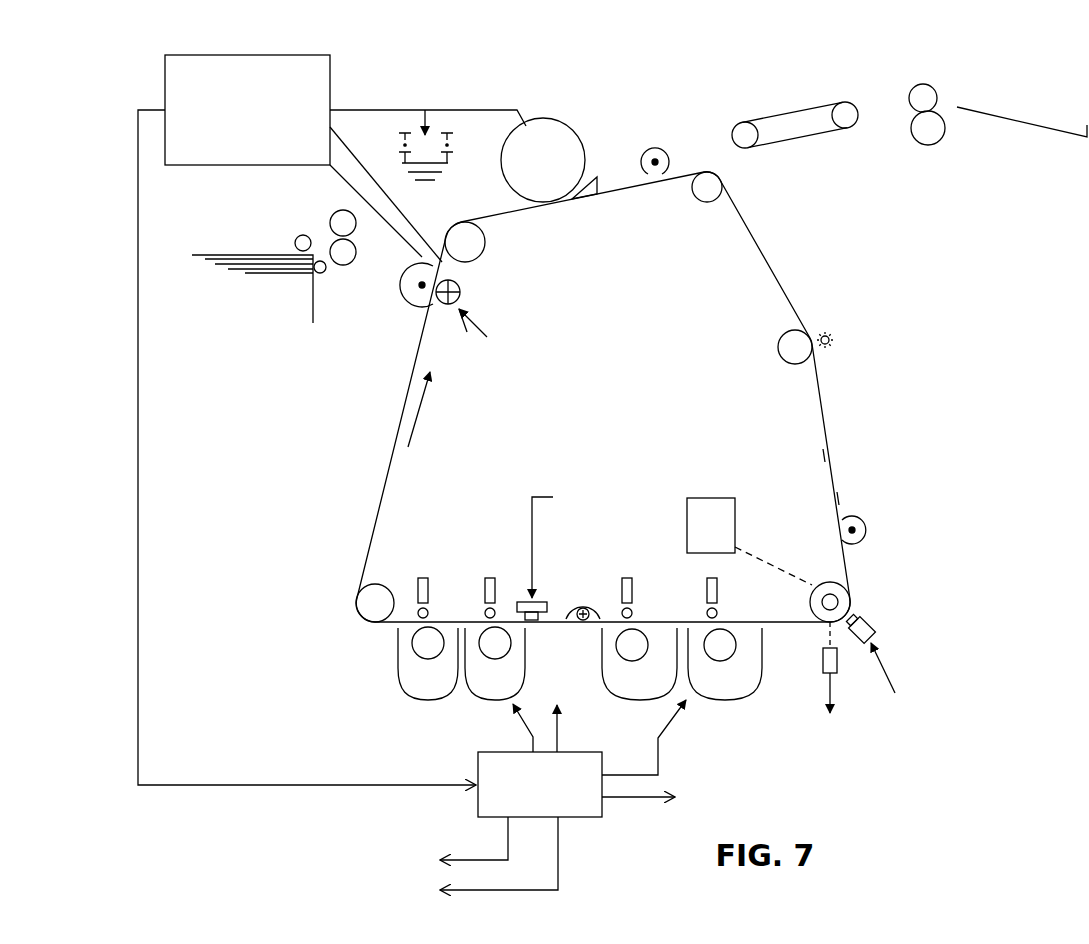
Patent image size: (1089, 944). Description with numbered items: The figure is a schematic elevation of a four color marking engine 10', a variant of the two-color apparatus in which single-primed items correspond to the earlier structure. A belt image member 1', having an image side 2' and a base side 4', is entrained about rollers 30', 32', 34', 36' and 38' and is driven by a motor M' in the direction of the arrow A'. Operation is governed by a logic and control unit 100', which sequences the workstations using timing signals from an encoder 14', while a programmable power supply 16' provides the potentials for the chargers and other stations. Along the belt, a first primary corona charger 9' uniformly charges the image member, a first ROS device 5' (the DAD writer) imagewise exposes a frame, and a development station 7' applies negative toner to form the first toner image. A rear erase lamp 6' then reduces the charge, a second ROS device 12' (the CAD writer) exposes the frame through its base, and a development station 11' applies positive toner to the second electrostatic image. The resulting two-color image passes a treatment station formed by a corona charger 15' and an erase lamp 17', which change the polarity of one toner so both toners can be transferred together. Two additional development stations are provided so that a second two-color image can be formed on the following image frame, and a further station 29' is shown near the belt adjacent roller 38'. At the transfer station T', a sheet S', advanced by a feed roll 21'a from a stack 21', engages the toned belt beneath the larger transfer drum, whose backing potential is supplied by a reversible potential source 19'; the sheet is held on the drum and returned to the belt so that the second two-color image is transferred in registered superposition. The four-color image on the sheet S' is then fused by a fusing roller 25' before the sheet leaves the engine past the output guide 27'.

The logic and control unit 100' is at (332, 410).
The reversible potential source 19' is at (444, 124).
The transfer station T' is at (473, 173).
The image member 1' is at (619, 397).
The base side 4' is at (796, 466).
The image side 2' is at (862, 482).
The direction of movement A' is at (443, 409).
The roller 34' is at (507, 241).
The roller 36' is at (671, 196).
The roller 38' is at (756, 340).
The erase lamp 29' is at (861, 351).
The four color marking engine 10' is at (959, 312).
The roller 30' is at (811, 589).
The motor M' is at (749, 541).
The first primary corona charger 9' is at (886, 526).
The first ROS device 5' is at (887, 642).
The encoder 14' is at (804, 710).
The roller 32' is at (393, 570).
The second ROS device 12' is at (510, 558).
The rear erase lamp 6' is at (589, 583).
The development station 11' is at (484, 686).
The development station 7' is at (725, 694).
The programmable power supply 16' is at (550, 795).
The corona charger 15' is at (384, 296).
The erase lamp 17' is at (485, 302).
The sheet S' is at (241, 265).
The feed roll 21'a is at (271, 229).
The stack 21' is at (268, 263).
The fusing roller 25' is at (949, 96).
The output tray 27' is at (1022, 140).